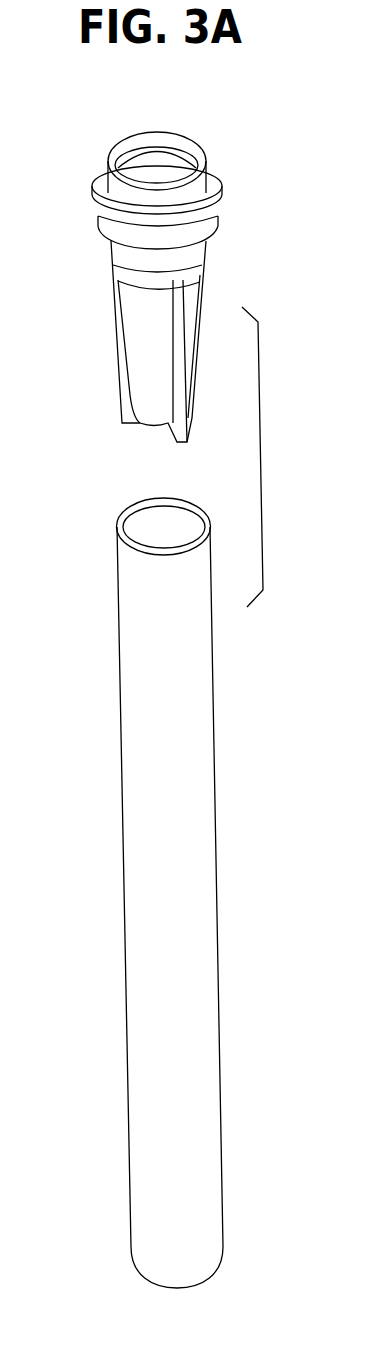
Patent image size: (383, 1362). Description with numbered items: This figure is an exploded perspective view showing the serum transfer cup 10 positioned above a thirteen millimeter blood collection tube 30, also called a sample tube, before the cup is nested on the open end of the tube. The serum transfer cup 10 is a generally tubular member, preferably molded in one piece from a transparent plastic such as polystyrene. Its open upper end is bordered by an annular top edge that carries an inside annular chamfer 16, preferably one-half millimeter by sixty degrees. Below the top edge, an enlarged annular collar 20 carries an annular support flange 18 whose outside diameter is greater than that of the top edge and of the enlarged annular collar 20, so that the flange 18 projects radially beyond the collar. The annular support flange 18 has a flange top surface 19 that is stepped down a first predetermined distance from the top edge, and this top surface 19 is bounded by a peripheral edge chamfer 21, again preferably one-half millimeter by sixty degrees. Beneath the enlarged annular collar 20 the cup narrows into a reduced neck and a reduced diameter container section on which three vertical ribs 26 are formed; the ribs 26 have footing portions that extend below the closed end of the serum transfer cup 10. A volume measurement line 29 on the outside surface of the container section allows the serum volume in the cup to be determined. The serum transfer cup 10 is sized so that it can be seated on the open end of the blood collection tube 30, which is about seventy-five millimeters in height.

The serum transfer cup 10 is at (117, 143).
The inside annular chamfer 16 is at (167, 145).
The flange top surface 19 is at (208, 172).
The peripheral edge chamfer 21 is at (221, 195).
The annular support flange 18 is at (217, 213).
The enlarged annular collar 20 is at (205, 232).
The volume measurement line 29 is at (120, 282).
The vertical ribs 26 is at (118, 374).
The 13 mm blood collection tube 30 is at (217, 851).